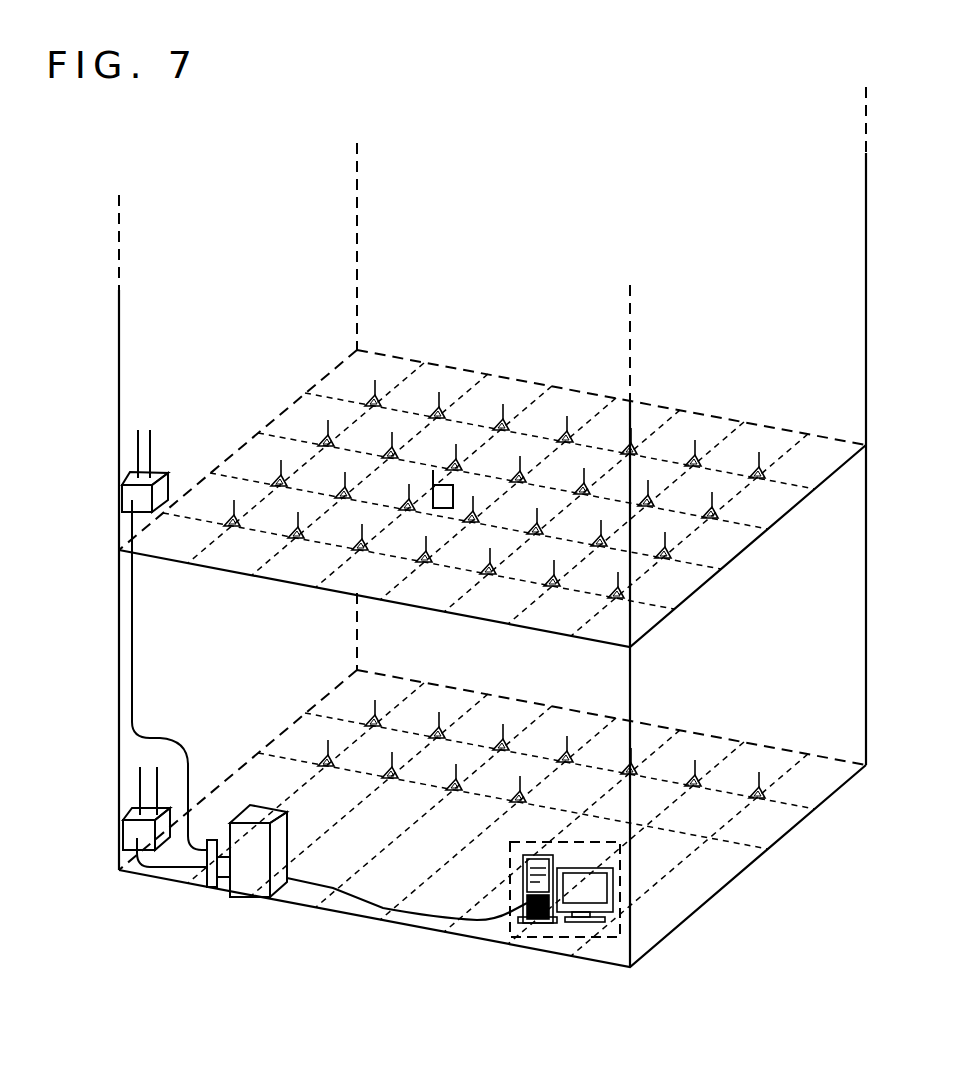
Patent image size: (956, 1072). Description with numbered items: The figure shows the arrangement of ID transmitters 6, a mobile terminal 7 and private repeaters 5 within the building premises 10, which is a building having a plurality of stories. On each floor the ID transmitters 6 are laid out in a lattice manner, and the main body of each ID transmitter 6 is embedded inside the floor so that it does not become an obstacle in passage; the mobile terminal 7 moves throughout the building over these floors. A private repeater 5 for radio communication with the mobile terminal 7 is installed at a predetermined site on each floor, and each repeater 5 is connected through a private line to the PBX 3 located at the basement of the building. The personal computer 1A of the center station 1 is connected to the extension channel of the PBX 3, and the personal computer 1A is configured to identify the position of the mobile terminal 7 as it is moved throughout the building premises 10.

The center station 1 is at (565, 909).
The personal computer 1A is at (588, 868).
The PBX 3 is at (258, 895).
The private repeater 5 is at (125, 491).
The ID transmitter 6 is at (388, 398).
The mobile terminal 7 is at (453, 487).
The building premises 10 is at (817, 812).